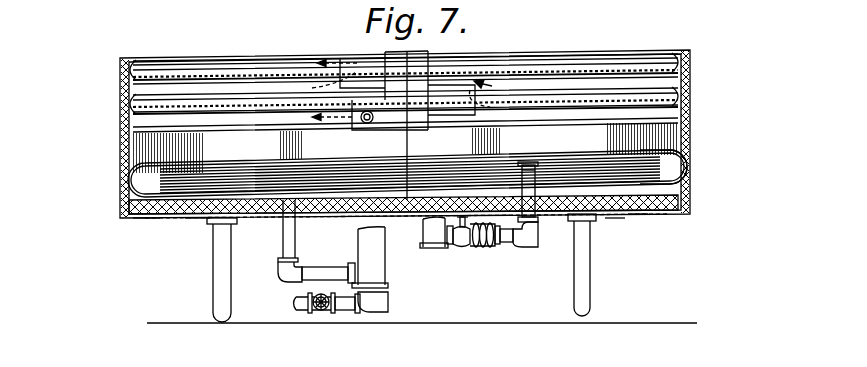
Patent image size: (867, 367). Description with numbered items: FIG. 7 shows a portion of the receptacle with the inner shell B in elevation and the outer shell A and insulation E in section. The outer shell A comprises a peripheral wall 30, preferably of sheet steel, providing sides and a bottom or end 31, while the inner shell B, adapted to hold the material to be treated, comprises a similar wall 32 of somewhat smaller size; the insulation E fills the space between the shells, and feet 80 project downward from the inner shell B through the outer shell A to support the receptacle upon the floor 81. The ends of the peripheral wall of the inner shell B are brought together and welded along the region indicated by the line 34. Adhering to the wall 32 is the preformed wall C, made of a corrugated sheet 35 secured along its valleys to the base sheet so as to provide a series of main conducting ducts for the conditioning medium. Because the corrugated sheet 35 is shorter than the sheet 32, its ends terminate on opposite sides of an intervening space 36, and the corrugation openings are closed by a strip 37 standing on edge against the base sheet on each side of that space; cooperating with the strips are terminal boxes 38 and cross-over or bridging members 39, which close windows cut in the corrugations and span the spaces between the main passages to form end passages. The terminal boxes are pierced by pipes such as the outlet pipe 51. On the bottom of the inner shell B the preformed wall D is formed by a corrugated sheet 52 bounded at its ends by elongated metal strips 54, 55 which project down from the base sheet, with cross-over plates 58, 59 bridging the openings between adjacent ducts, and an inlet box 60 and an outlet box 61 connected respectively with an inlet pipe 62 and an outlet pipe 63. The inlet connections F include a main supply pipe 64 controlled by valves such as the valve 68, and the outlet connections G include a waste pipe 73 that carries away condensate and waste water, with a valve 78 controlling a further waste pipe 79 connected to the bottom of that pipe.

The peripheral wall 30 is at (121, 92).
The bottom or end 31 is at (199, 219).
The wall 32 is at (665, 145).
The line 34 is at (413, 76).
The corrugated sheet 35 is at (690, 78).
The intervening space 36 is at (408, 117).
The strip 37 is at (381, 63).
The terminal box 38 is at (377, 123).
The cross-over or bridging member 39 is at (354, 78).
The outlet pipe 51 is at (364, 122).
The corrugated sheet 52 is at (637, 214).
The elongated metal strip 54 is at (149, 219).
The elongated metal strip 55 is at (618, 214).
The cross-over member or plate 58 is at (385, 168).
The cross-over member or plate 59 is at (700, 188).
The inlet box 60 is at (531, 165).
The outlet box 61 is at (276, 215).
The inlet pipe 62 is at (548, 186).
The outlet pipe 63 is at (282, 238).
The main supply pipe 64 is at (438, 238).
The valve 68 is at (472, 246).
The waste pipe 73 is at (395, 269).
The valve 78 is at (321, 312).
The waste pipe 79 is at (350, 311).
The feet 80 is at (214, 270).
The floor 81 is at (258, 323).
The outer shell A is at (117, 148).
The inner shell B is at (132, 168).
The preformed wall C is at (124, 126).
The preformed wall D is at (350, 214).
The insulation E is at (126, 206).
The inlet connections F is at (516, 245).
The outlet connections G is at (391, 266).